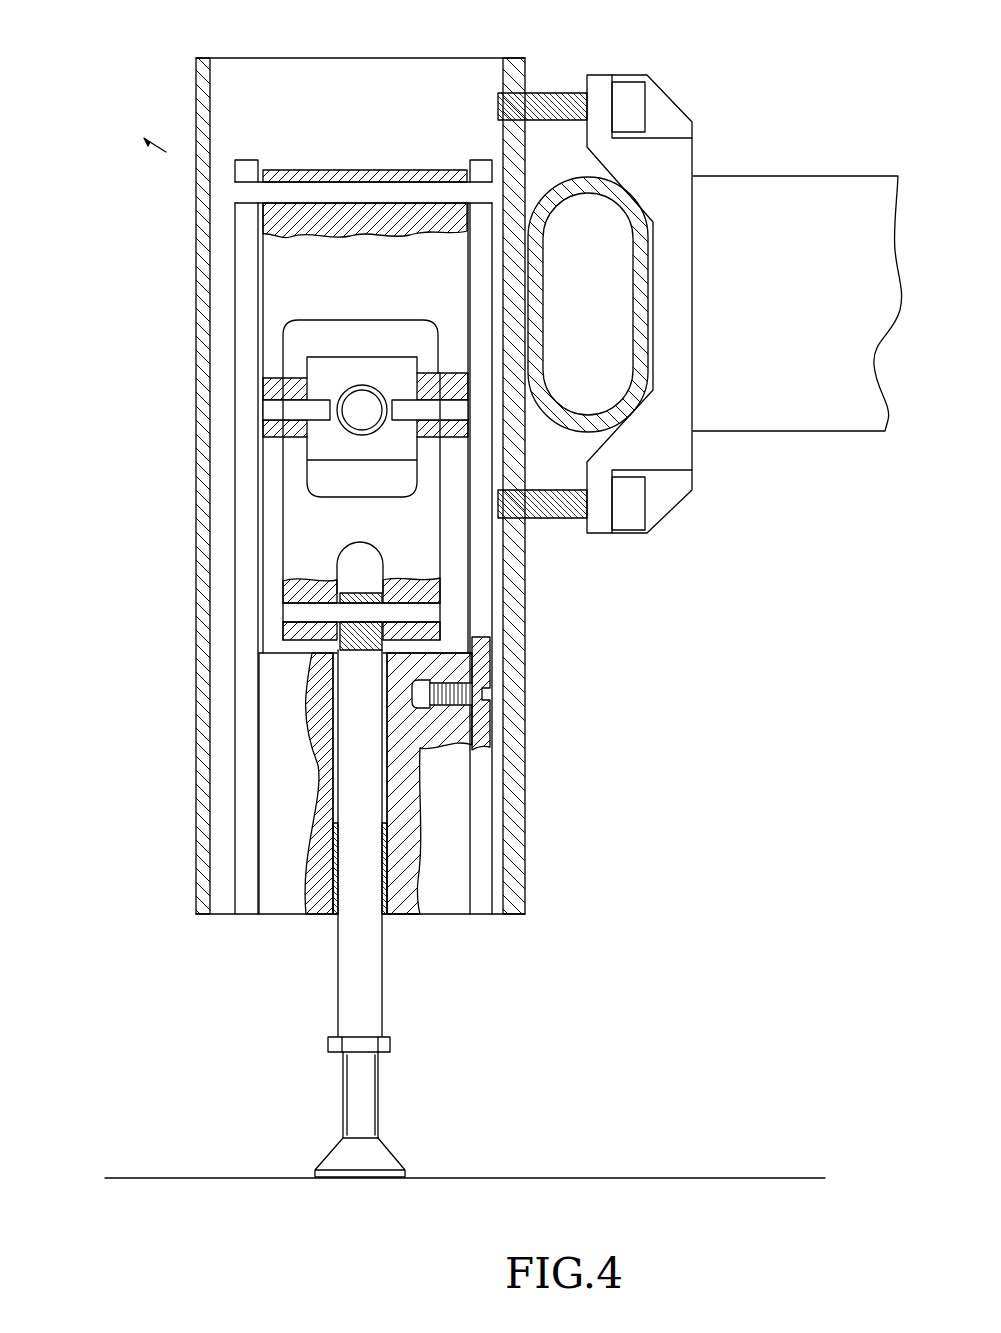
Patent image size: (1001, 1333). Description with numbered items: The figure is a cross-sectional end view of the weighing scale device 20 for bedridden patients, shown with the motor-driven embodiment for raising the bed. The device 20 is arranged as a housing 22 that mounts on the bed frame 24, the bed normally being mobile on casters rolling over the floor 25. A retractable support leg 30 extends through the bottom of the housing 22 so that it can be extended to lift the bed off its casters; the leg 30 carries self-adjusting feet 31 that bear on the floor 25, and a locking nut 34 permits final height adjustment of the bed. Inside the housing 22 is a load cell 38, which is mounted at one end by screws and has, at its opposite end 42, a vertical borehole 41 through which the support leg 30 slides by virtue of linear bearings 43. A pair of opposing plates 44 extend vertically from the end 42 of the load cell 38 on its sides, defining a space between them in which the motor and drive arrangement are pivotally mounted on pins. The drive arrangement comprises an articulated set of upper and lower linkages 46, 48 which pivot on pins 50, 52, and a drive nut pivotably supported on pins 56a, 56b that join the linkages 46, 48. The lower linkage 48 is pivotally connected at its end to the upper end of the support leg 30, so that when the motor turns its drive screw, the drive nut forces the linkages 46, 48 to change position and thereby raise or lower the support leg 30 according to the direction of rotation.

The weighing scale device 20 is at (116, 97).
The housing 22 is at (223, 917).
The bed frame 24 is at (793, 176).
The floor 25 is at (727, 1178).
The support leg 30 is at (338, 995).
The self-adjusting feet 31 is at (403, 1145).
The locking nut 34 is at (392, 1047).
The load cell 38 is at (267, 713).
The borehole 41 is at (307, 765).
The end 42 is at (268, 870).
The linear bearings 43 is at (405, 916).
The opposing plates 44 is at (243, 322).
The upper linkage 46 is at (257, 277).
The lower linkage 48 is at (290, 523).
The pin 50 is at (388, 185).
The pin 52 is at (287, 612).
The pin 56a is at (280, 410).
The pin 56b is at (403, 407).